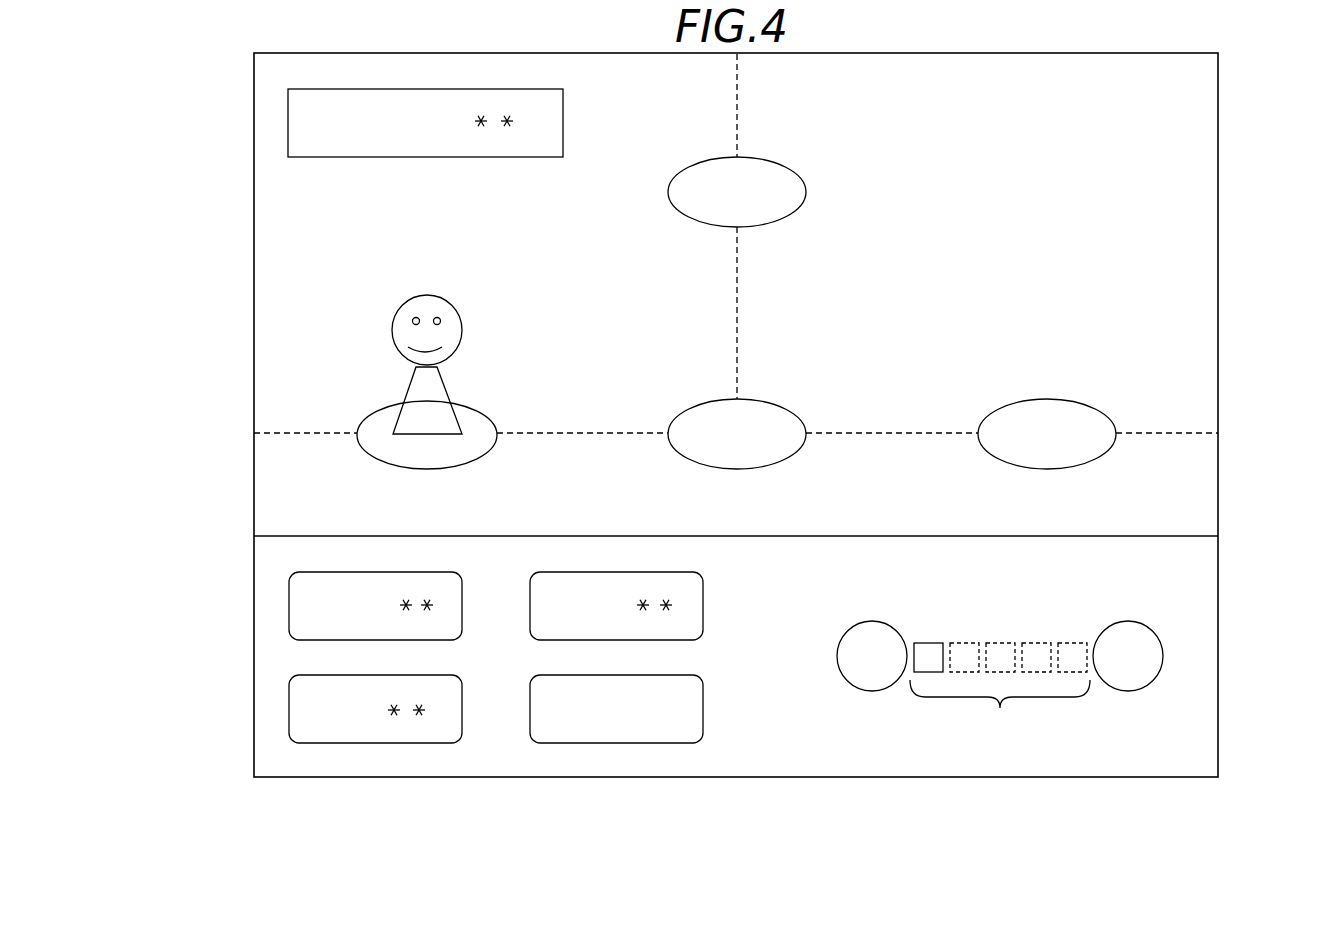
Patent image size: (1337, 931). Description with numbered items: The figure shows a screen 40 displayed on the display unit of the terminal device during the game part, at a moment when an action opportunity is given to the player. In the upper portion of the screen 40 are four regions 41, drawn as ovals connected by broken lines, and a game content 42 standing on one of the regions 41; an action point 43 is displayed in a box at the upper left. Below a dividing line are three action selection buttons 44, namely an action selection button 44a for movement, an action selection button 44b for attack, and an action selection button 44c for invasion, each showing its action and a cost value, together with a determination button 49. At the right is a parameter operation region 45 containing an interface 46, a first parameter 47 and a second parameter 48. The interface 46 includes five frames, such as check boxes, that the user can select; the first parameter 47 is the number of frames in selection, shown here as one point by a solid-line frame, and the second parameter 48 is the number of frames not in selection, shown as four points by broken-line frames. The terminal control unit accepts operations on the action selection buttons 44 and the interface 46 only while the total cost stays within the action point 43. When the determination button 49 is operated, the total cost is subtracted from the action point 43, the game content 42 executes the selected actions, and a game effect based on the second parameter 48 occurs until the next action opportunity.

The screen 40 is at (1218, 119).
The regions 41 is at (785, 168).
The game content 42 is at (453, 305).
The action point 43 is at (563, 116).
The action selection buttons 44 is at (477, 712).
The action selection button 44a is at (289, 603).
The action selection button 44b is at (417, 743).
The action selection button 44c is at (703, 608).
The parameter operation region 45 is at (1000, 755).
The interface 46 is at (1000, 708).
The first parameter 47 is at (870, 691).
The second parameter 48 is at (1128, 729).
The determination button 49 is at (578, 743).